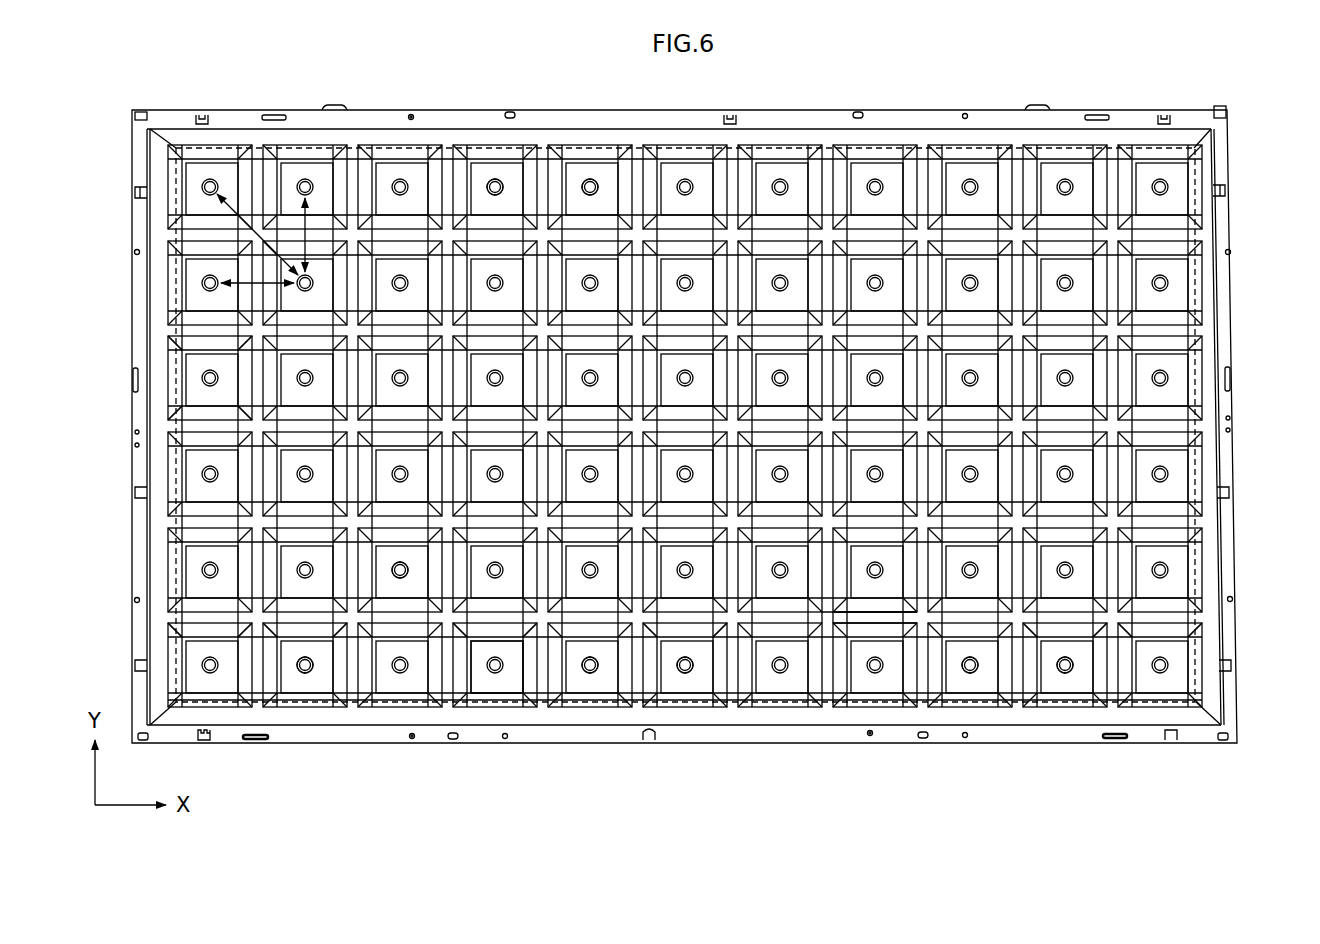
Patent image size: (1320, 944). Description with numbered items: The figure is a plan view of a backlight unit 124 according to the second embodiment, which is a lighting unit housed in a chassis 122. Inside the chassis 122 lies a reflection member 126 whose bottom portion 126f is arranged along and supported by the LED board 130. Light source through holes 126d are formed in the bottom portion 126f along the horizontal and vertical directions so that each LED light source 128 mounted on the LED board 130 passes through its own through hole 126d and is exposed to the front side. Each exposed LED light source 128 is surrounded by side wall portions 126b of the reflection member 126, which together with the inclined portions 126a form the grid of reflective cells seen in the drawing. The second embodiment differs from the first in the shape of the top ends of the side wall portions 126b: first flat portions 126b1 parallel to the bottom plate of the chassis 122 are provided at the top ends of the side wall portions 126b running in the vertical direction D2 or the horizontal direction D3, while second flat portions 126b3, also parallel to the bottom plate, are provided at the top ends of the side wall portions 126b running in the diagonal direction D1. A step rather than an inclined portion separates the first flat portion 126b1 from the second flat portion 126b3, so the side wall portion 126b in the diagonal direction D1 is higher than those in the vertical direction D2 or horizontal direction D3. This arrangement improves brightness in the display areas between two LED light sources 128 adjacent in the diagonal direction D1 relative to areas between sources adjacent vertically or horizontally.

The chassis 122 is at (1225, 632).
The backlight unit 124 is at (610, 780).
The reflection member 126 is at (1220, 544).
The inclined portion 126a is at (215, 440).
The side wall portion 126b is at (912, 820).
The first flat portion 126b1 is at (857, 618).
The second flat portion 126b3 is at (832, 618).
The light source through hole 126d is at (588, 183).
The bottom portion 126f is at (513, 683).
The LED light source 128 is at (400, 578).
The LED board 130 is at (177, 177).
The diagonal direction D1 is at (262, 230).
The vertical direction D2 is at (310, 228).
The horizontal direction D3 is at (247, 278).